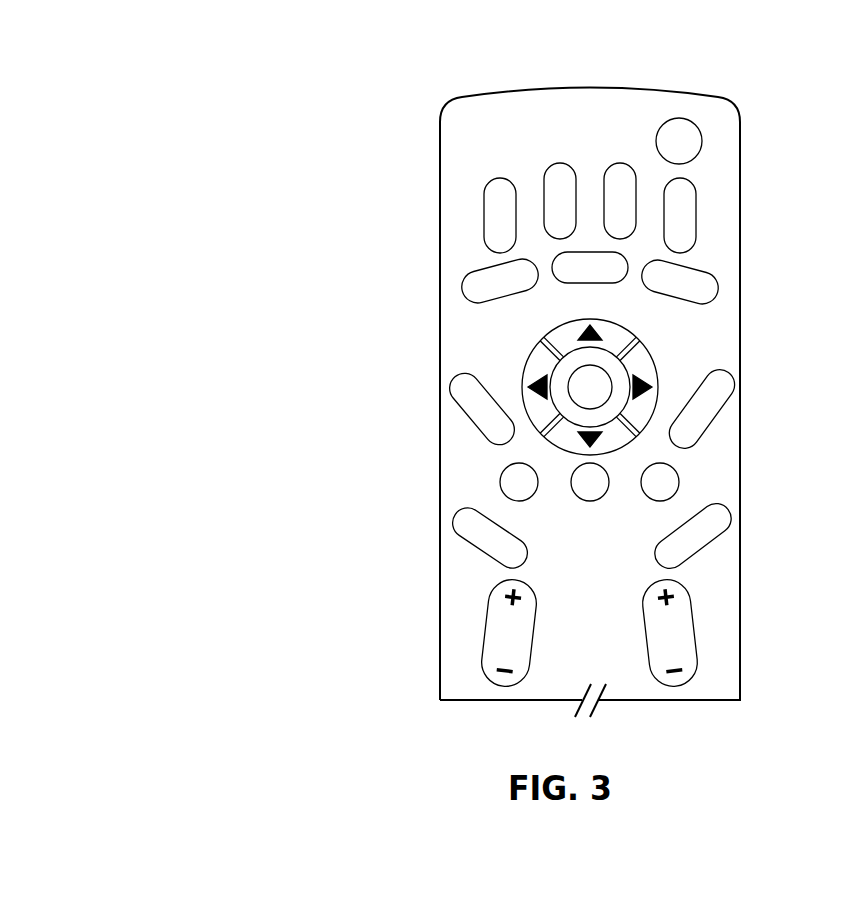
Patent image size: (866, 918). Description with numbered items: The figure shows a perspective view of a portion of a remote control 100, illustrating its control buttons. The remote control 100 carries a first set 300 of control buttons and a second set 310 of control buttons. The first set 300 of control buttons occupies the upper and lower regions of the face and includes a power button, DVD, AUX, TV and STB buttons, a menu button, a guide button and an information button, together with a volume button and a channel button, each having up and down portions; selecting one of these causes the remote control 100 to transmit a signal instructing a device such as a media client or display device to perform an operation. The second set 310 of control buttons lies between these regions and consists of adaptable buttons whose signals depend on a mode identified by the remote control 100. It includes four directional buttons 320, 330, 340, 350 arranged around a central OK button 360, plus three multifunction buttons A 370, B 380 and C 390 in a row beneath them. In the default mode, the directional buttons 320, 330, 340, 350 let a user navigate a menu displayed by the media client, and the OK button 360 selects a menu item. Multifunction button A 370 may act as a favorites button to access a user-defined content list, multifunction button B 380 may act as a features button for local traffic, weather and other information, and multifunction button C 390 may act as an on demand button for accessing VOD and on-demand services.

The remote control 100 is at (184, 73).
The first set of control buttons 300 is at (757, 107).
The second set of control buttons 310 is at (757, 320).
The directional button 320 is at (570, 336).
The directional button 330 is at (640, 357).
The directional button 340 is at (570, 445).
The directional button 350 is at (546, 346).
The OK button 360 is at (573, 381).
The multifunction button A 370 is at (502, 486).
The multifunction button B 380 is at (604, 496).
The multifunction button C 390 is at (678, 477).